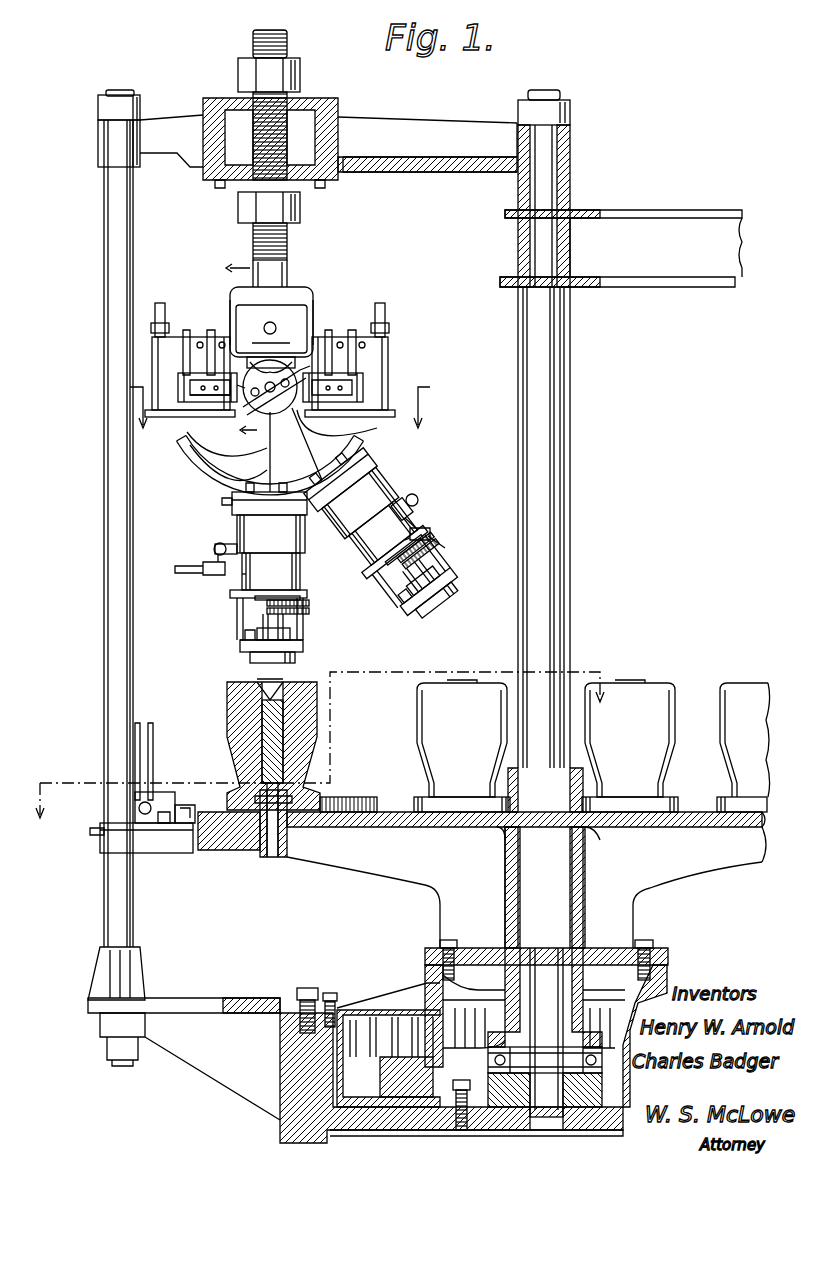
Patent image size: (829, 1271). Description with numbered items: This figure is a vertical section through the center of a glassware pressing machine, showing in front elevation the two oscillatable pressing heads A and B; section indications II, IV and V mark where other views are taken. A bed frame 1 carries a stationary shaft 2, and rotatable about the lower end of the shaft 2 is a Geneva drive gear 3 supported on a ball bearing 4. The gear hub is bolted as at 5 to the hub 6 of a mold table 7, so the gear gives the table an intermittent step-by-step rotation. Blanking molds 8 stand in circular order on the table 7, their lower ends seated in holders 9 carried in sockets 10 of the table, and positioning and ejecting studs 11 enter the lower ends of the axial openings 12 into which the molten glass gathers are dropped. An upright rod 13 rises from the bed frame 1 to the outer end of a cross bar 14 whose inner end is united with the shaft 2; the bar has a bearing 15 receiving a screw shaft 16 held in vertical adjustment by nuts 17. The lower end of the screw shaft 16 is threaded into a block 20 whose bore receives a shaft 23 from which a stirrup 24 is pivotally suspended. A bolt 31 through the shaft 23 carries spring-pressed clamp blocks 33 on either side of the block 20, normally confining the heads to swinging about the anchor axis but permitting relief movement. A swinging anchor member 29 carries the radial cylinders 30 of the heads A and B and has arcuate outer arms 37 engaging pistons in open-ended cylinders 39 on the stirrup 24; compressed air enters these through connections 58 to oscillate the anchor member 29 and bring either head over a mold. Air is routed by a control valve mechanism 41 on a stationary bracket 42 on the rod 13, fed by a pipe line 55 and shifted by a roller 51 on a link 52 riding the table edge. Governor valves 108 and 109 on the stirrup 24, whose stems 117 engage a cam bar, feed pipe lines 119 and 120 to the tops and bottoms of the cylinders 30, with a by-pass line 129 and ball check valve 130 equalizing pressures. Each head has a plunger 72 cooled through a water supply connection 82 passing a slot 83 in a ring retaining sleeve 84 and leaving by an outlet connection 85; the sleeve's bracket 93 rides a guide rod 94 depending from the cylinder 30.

The bed frame 1 is at (282, 1128).
The stationary shaft 2 is at (570, 628).
The Geneva drive gear 3 is at (400, 1060).
The ball bearing 4 is at (598, 1048).
The bolted connection 5 is at (440, 943).
The hub 6 is at (505, 854).
The mold table 7 is at (385, 828).
The blanking molds 8 is at (227, 730).
The holders 9 is at (300, 818).
The sockets 10 is at (229, 831).
The positioning and ejecting studs 11 is at (265, 856).
The axial openings 12 is at (262, 760).
The upright rod 13 is at (104, 572).
The cross bar 14 is at (180, 168).
The bearing 15 is at (338, 100).
The screw shaft 16 is at (288, 243).
The nuts 17 is at (300, 66).
The block 20 is at (288, 280).
The shaft 23 is at (230, 328).
The clevis or stirrup 24 is at (315, 312).
The swinging anchor member 29 is at (243, 478).
The cylinders 30 is at (237, 518).
The bolt 31 is at (276, 325).
The clamp blocks 33 is at (271, 329).
The arcuate outer arms 37 is at (192, 456).
The open ended cylinders 39 is at (152, 355).
The control valve mechanism 41 is at (165, 796).
The stationary bracket 42 is at (158, 830).
The roller 51 is at (185, 802).
The link 52 is at (185, 826).
The pipe line 55 is at (90, 830).
The connections 58 is at (160, 305).
The plunger 72 is at (248, 640).
The flexible water supply connection 82 is at (300, 597).
The vertical slot 83 is at (284, 632).
The ring retaining sleeve 84 is at (290, 636).
The water outlet connection 85 is at (312, 611).
The fixed bracket 93 is at (240, 648).
The guide rod 94 is at (237, 612).
The governor valve 108 is at (250, 400).
The governor valve 109 is at (298, 398).
The stem 117 is at (269, 343).
The flexible pipe lines 119 is at (190, 392).
The pipe lines 120 is at (178, 385).
The by-pass line 129 is at (203, 566).
The ball check valve 130 is at (215, 546).
The pressing head A is at (242, 574).
The pressing head B is at (410, 538).
The section line II is at (315, 755).
The section line IV is at (226, 350).
The section line V is at (279, 418).